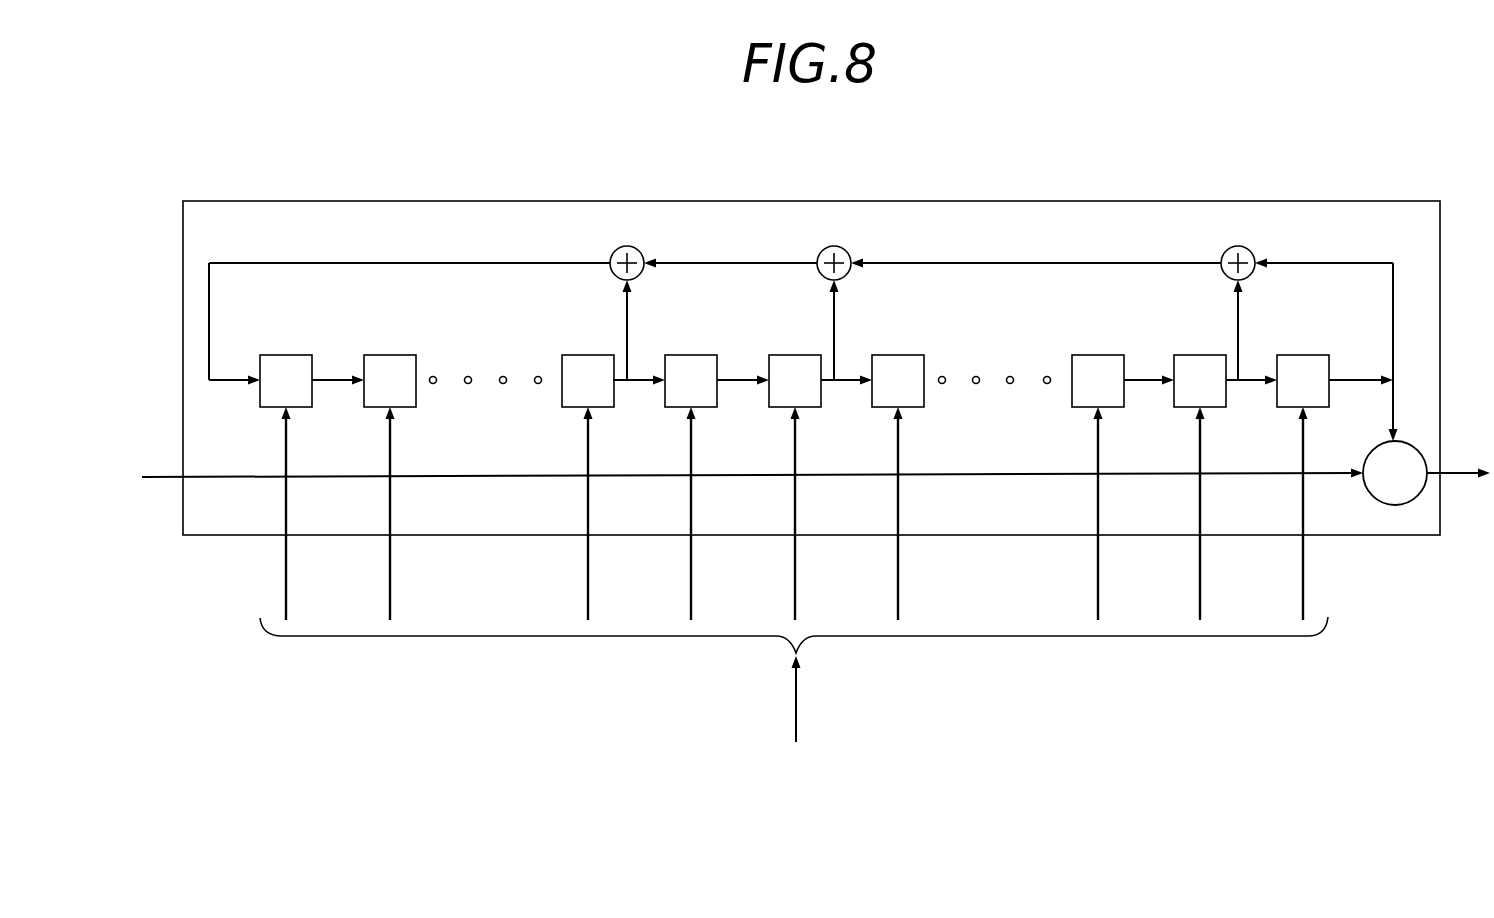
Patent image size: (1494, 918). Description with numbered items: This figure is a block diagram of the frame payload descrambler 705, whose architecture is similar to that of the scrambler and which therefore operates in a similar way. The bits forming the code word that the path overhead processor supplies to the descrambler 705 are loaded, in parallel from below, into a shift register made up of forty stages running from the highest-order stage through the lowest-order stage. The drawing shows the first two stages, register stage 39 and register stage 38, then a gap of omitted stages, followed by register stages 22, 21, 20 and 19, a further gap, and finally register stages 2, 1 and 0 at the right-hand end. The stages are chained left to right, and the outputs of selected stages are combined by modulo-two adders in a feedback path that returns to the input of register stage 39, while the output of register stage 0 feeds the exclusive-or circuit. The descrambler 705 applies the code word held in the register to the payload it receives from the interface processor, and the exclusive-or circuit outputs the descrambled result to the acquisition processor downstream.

The descrambler 705 is at (816, 472).
The register stage b39 39 is at (285, 567).
The register stage b38 38 is at (389, 567).
The register stage b22 22 is at (587, 567).
The register stage b21 21 is at (690, 567).
The register stage b20 20 is at (794, 567).
The register stage b19 19 is at (897, 567).
The register stage b2 2 is at (1097, 567).
The register stage b1 1 is at (1199, 567).
The register stage b0 0 is at (1280, 487).